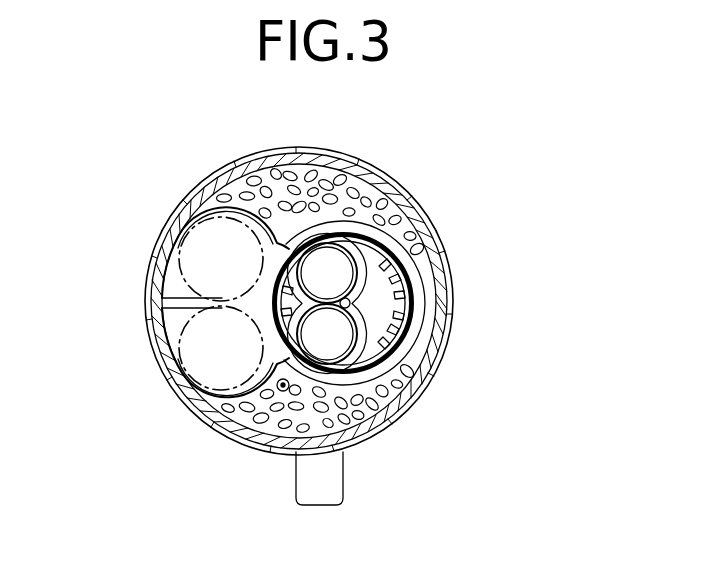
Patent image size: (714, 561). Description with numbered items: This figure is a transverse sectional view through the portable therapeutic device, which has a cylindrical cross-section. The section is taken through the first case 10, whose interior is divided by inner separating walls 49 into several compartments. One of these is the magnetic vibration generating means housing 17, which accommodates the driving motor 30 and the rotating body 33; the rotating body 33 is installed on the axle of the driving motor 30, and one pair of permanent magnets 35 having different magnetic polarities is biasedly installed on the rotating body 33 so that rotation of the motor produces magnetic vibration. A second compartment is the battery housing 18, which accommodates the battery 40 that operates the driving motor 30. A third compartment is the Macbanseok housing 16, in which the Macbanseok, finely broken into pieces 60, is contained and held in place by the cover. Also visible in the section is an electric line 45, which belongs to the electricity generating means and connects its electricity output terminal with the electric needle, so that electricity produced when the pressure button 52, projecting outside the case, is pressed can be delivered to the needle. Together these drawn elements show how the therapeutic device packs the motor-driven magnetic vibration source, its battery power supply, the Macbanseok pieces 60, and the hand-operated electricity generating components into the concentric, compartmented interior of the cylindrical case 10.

The first case 10 is at (410, 418).
The Macbanseok housing 16 is at (330, 166).
The magnetic vibration generating means housing 17 is at (426, 262).
The battery housing 18 is at (170, 282).
The driving motor 30 is at (408, 349).
The rotating body 33 is at (403, 313).
The permanent magnets 35 is at (343, 283).
The battery 40 is at (168, 334).
The electric line 45 is at (278, 391).
The inner separating walls 49 is at (382, 190).
The pressure button 52 is at (333, 488).
The Macbanseok pieces 60 is at (250, 186).